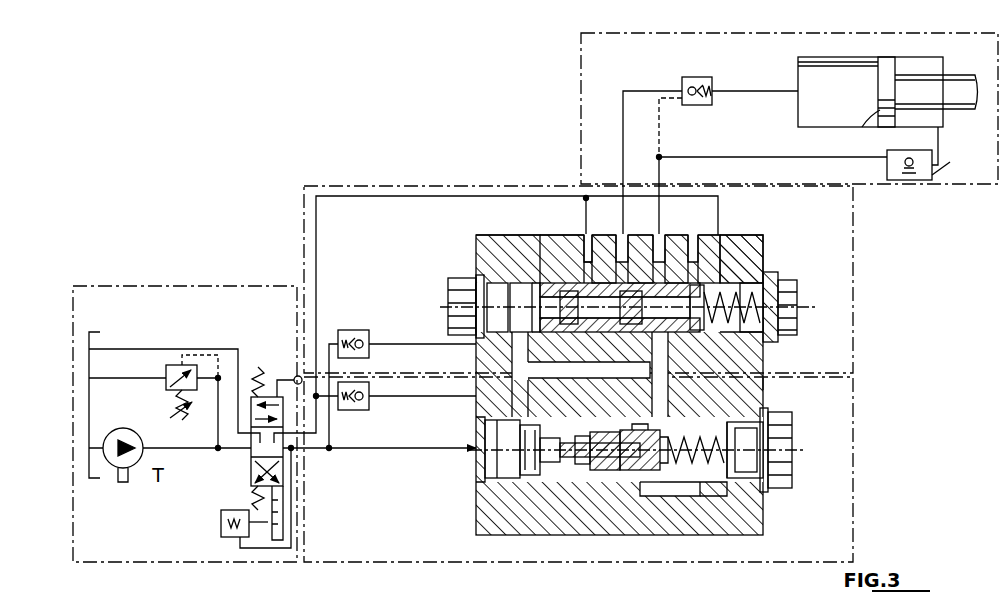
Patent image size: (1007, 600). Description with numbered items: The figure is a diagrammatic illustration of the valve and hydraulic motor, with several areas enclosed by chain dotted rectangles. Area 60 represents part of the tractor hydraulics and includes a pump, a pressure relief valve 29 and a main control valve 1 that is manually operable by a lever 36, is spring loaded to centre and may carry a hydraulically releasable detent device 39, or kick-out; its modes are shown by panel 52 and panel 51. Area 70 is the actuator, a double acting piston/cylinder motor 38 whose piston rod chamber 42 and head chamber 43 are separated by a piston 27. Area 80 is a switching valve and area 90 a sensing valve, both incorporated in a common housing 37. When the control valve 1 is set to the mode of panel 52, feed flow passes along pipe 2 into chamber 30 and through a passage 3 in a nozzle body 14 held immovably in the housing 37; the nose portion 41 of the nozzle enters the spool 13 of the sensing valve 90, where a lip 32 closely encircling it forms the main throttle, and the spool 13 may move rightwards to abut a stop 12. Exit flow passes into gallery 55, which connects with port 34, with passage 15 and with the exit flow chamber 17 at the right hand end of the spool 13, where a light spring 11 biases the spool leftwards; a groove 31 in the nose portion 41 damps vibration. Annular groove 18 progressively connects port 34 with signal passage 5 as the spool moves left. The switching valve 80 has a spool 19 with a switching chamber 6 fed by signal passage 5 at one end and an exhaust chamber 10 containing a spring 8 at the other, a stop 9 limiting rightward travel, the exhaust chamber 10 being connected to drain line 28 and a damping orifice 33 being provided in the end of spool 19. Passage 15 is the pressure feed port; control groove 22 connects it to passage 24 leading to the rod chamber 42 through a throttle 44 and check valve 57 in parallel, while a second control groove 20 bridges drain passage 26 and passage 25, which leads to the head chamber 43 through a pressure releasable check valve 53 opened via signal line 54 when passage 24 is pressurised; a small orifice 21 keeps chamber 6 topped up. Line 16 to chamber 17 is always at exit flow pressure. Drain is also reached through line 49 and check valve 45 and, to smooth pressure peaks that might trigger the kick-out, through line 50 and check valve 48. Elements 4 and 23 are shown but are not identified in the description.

The main control valve 1 is at (248, 490).
The pipe 2 is at (322, 452).
The passage 3 is at (558, 452).
The valve housing 4 is at (742, 520).
The signal passage 5 is at (518, 360).
The switching chamber 6 is at (462, 282).
The spring 8 is at (750, 285).
The stop 9 is at (745, 300).
The exhaust chamber 10 is at (786, 332).
The light spring 11 is at (746, 450).
The stop 12 is at (776, 470).
The spool 13 is at (705, 468).
The nozzle body 14 is at (545, 466).
The passage 15 is at (740, 340).
The line 16 is at (716, 494).
The exit flow chamber 17 is at (732, 430).
The annular groove 18 is at (690, 496).
The spool 19 is at (495, 262).
The second control groove 20 is at (562, 248).
The small orifice 21 is at (510, 283).
The annular control groove 22 is at (659, 242).
The spring chamber body 23 is at (730, 240).
The passage 24 is at (692, 242).
The passage 25 is at (620, 242).
The drain passage 26 is at (586, 236).
The piston 27 is at (870, 112).
The hydraulic drain line 28 is at (322, 198).
The pressure relief valve 29 is at (166, 378).
The chamber 30 is at (485, 440).
The groove 31 is at (642, 472).
The lip 32 is at (602, 472).
The damping orifice 33 is at (702, 262).
The port 34 is at (655, 496).
The lever 36 is at (296, 376).
The common housing 37 is at (766, 388).
The double acting piston/cylinder motor 38 is at (885, 58).
The hydraulically releasable detent device 39 is at (221, 526).
The nose portion 41 is at (530, 480).
The piston rod chamber 42 is at (955, 75).
The head chamber 43 is at (798, 85).
The throttle 44 is at (950, 162).
The check valve 45 is at (350, 330).
The check valve 48 is at (354, 410).
The line 49 is at (380, 344).
The line 50 is at (386, 397).
The panel 51 is at (251, 463).
The panel 52 is at (256, 392).
The pressure releasable check valve 53 is at (684, 78).
The signal line 54 is at (663, 110).
The gallery 55 is at (583, 466).
The check valve 57 is at (902, 150).
The area of tractor hydraulics 60 is at (184, 284).
The actuator 70 is at (955, 188).
The switching valve 80 is at (856, 275).
The sensing valve 90 is at (856, 410).